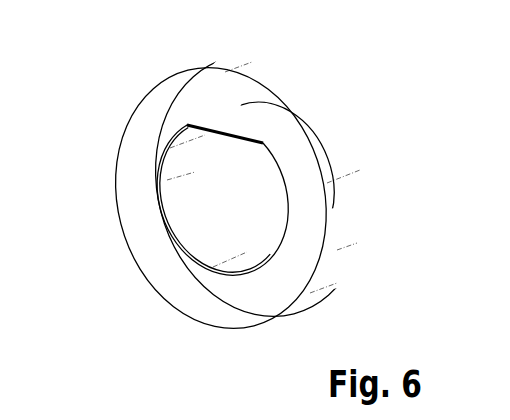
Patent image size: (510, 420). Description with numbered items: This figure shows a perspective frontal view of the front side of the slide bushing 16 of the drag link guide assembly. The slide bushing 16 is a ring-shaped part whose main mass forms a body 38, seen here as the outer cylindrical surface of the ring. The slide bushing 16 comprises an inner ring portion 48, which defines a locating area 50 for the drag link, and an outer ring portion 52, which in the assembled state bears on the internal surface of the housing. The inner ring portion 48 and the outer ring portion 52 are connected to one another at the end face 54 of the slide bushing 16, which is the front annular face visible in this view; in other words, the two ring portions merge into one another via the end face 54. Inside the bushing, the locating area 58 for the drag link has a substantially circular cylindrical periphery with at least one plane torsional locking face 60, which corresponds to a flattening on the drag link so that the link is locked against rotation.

The slide bushing 16 is at (118, 84).
The outer ring portion 52 is at (302, 102).
The body 38 is at (352, 210).
The end face 54 is at (254, 297).
The locating area 50 is at (214, 250).
The inner ring portion 48 is at (183, 227).
The locating area 58 is at (172, 194).
The plane torsional locking face 60 is at (248, 148).